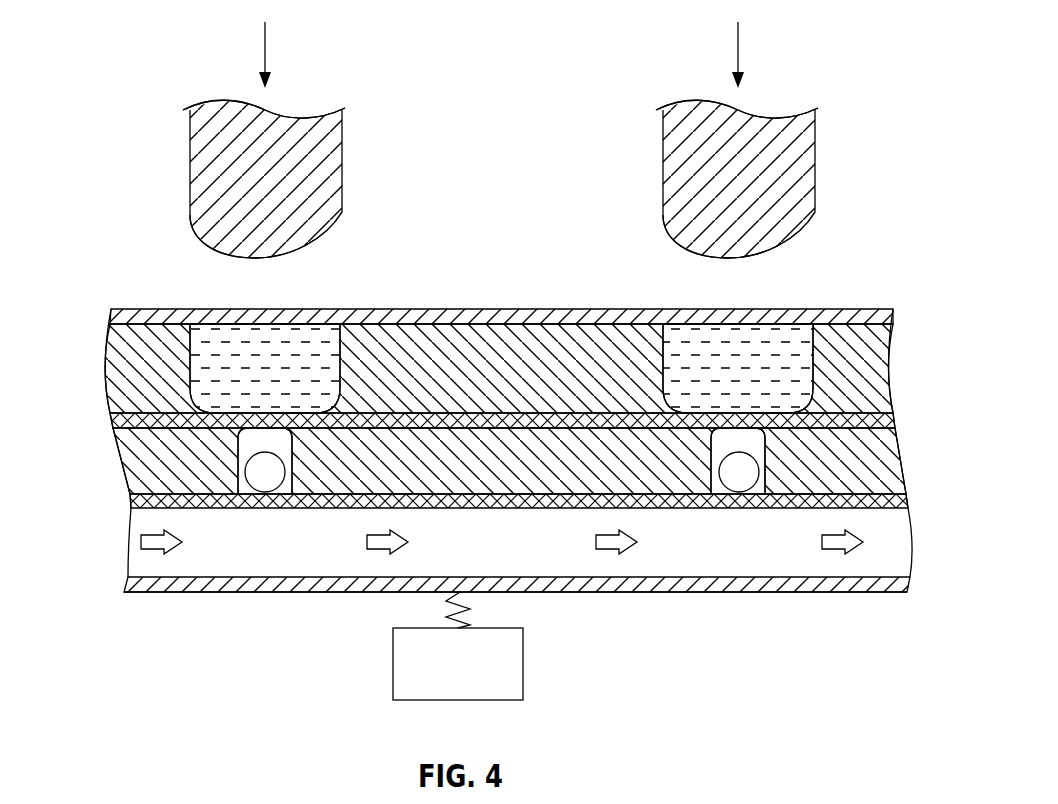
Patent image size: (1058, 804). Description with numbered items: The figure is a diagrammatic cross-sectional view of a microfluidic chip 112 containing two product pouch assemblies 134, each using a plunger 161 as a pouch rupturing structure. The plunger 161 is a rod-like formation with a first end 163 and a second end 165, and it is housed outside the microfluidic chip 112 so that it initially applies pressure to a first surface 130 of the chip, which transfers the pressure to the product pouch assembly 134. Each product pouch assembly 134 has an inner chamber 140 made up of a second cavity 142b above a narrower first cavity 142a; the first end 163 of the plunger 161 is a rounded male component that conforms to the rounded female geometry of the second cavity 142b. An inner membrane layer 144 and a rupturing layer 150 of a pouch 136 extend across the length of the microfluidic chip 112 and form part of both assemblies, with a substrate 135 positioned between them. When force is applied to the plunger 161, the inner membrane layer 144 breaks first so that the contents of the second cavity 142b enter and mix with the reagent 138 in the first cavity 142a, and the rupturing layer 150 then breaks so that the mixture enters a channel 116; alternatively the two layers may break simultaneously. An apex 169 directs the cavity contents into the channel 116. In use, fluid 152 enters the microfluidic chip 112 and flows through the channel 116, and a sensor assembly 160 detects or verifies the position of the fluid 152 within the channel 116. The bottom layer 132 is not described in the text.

The microfluidic chip 112 is at (178, 55).
The channel 116 is at (200, 552).
The first surface 130 is at (155, 318).
The bottom layer 132 is at (135, 588).
The product pouch assembly 134 is at (188, 360).
The substrate 135 is at (125, 345).
The pouch 136 is at (343, 330).
The reagent 138 is at (265, 477).
The inner chamber 140 is at (325, 333).
The first cavity 142a is at (277, 440).
The second cavity 142b is at (215, 345).
The inner membrane layer 144 is at (117, 427).
The rupturing layer 150 is at (135, 500).
The fluid 152 is at (132, 545).
The sensor assembly 160 is at (525, 660).
The plunger 161 is at (320, 190).
The first end 163 is at (328, 244).
The second end 165 is at (347, 125).
The apex 169 is at (289, 496).